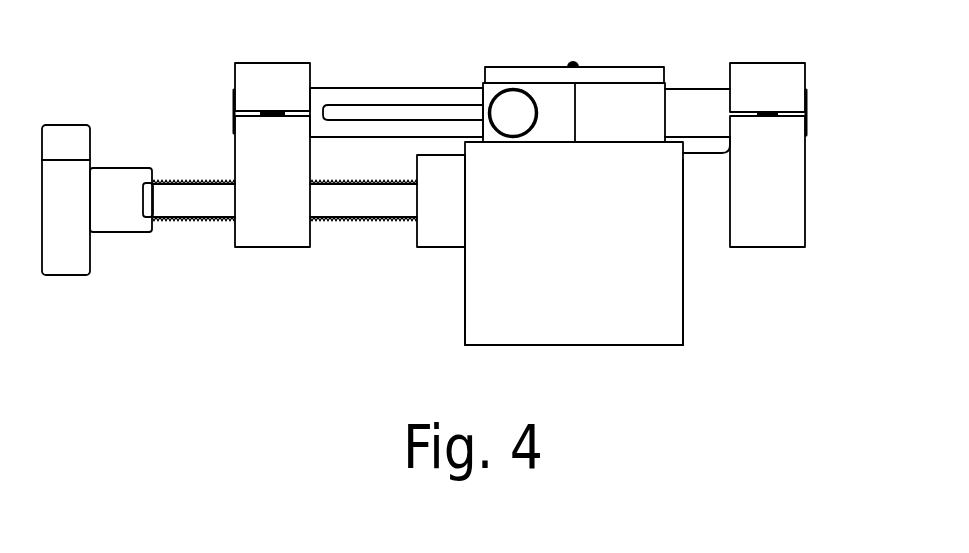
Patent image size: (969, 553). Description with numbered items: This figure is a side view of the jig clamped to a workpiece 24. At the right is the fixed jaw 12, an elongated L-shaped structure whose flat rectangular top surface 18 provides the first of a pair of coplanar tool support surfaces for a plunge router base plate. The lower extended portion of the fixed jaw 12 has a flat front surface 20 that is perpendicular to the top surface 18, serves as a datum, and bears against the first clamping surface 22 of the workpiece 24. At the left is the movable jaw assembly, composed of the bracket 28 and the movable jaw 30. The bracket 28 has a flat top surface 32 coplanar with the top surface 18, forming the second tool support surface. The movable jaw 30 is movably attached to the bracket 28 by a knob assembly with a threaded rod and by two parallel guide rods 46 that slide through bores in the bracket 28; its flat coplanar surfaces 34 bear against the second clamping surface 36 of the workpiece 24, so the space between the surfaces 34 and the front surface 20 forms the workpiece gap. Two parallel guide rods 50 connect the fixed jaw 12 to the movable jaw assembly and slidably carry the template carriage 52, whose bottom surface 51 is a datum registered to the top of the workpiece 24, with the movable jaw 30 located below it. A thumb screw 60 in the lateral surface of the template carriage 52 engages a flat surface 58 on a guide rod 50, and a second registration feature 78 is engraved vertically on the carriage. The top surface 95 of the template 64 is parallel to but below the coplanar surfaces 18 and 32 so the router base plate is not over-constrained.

The fixed jaw 12 is at (805, 63).
The top surface 18 is at (742, 63).
The front surface 20 is at (683, 227).
The first clamping surface 22 is at (683, 272).
The workpiece 24 is at (683, 345).
The bracket 28 is at (235, 63).
The movable jaw 30 is at (417, 247).
The top surface 32 is at (300, 63).
The coplanar surfaces 34 is at (465, 213).
The second workpiece clamping surface 36 is at (465, 290).
The guide rods 46 is at (198, 202).
The guide rods 50 is at (365, 95).
The bottom surface 51 is at (538, 143).
The template carriage 52 is at (603, 125).
The flat surface 58 is at (337, 116).
The thumb screw 60 is at (530, 113).
The template 64 is at (640, 67).
The second registration feature 78 is at (577, 102).
The top surface 95 is at (510, 67).